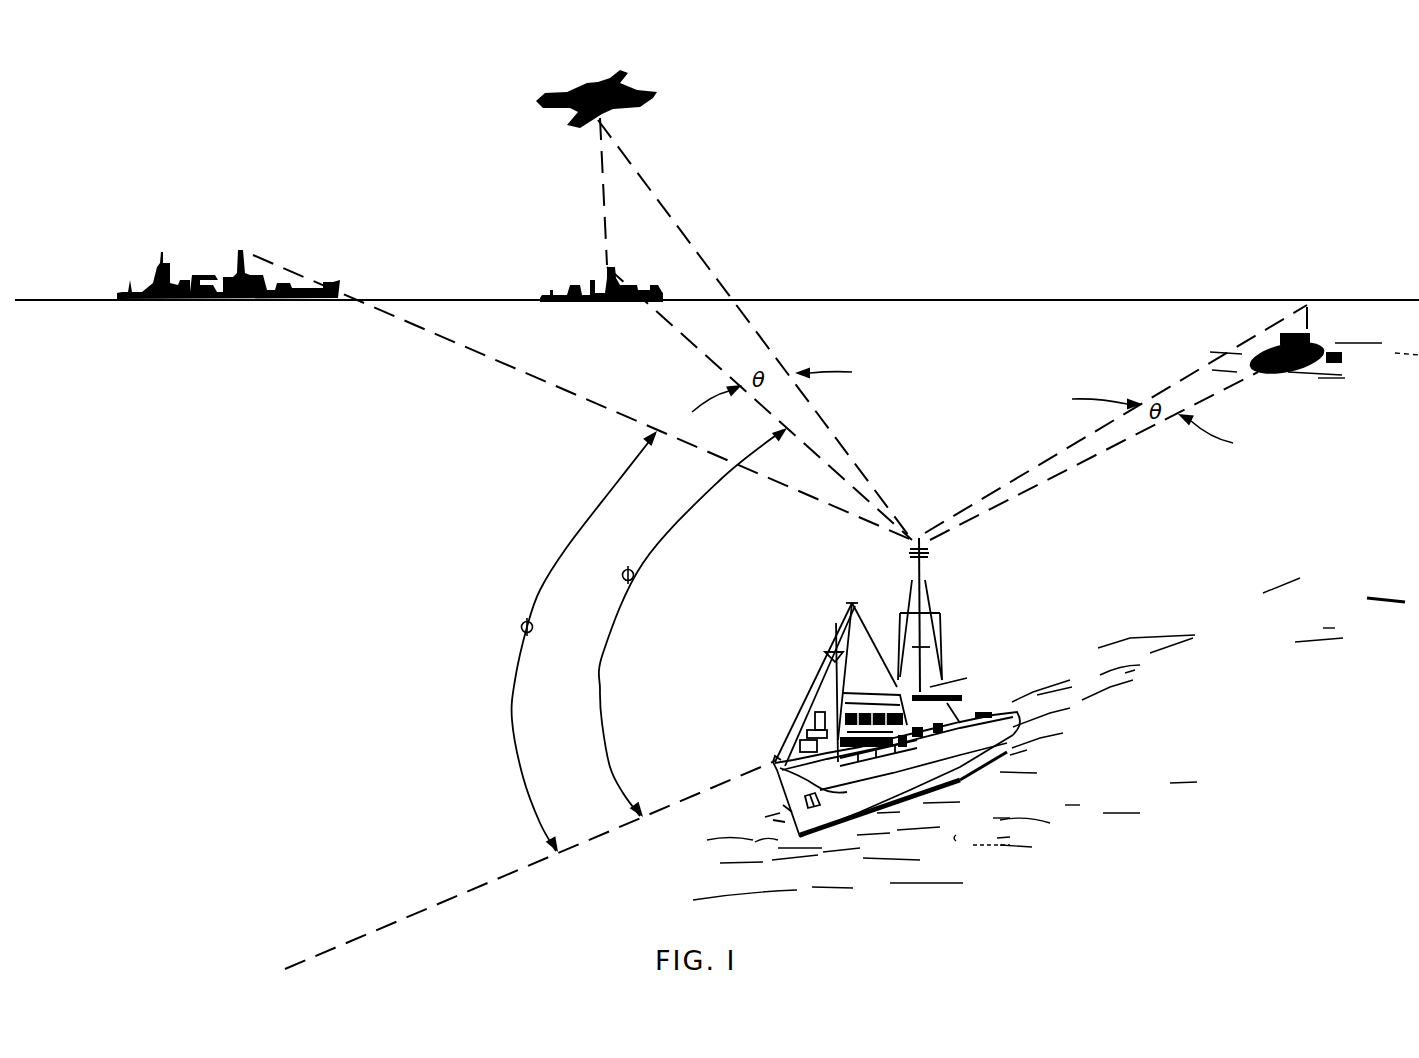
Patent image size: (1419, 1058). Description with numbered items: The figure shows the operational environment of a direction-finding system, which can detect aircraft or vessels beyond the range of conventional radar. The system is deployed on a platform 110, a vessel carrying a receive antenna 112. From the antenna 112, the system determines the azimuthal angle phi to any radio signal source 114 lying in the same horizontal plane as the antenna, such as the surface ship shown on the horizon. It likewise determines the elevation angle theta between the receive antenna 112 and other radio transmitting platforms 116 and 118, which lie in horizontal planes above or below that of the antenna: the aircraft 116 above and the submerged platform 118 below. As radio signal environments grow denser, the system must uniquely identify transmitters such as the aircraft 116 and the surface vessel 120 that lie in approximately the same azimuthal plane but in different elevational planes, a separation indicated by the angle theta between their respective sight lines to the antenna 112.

The platform 110 is at (773, 760).
The receive antenna 112 is at (930, 558).
The radio signal source 114 is at (165, 276).
The radio transmitting platform 116 is at (653, 90).
The radio transmitting platform 118 is at (1278, 376).
The radio transmitter 120 is at (592, 284).